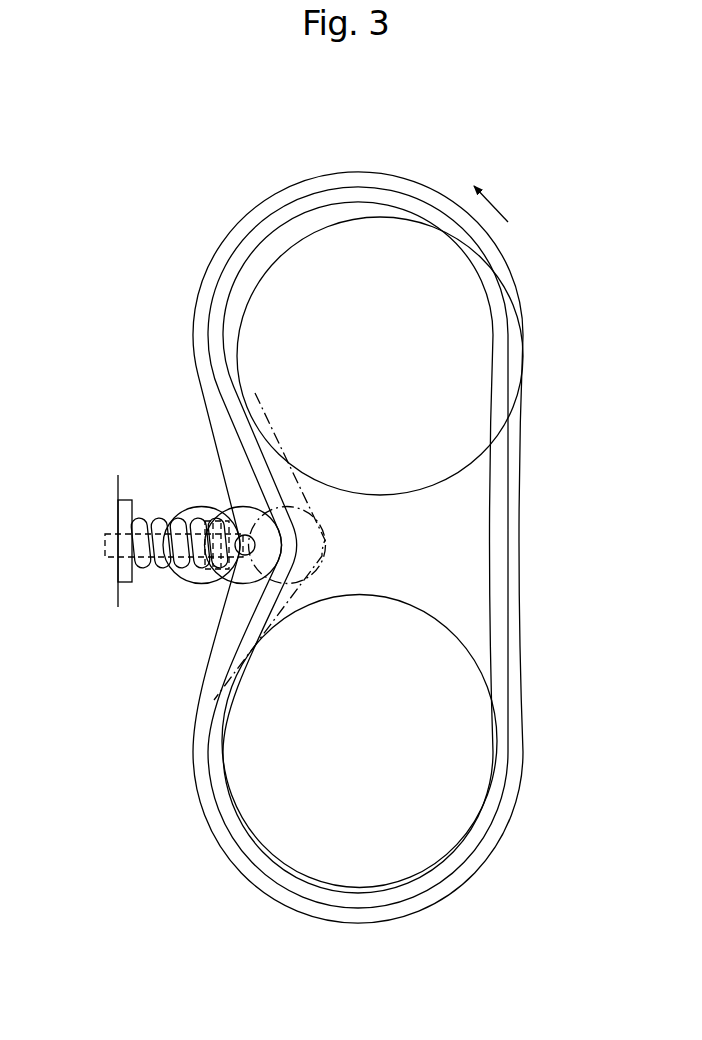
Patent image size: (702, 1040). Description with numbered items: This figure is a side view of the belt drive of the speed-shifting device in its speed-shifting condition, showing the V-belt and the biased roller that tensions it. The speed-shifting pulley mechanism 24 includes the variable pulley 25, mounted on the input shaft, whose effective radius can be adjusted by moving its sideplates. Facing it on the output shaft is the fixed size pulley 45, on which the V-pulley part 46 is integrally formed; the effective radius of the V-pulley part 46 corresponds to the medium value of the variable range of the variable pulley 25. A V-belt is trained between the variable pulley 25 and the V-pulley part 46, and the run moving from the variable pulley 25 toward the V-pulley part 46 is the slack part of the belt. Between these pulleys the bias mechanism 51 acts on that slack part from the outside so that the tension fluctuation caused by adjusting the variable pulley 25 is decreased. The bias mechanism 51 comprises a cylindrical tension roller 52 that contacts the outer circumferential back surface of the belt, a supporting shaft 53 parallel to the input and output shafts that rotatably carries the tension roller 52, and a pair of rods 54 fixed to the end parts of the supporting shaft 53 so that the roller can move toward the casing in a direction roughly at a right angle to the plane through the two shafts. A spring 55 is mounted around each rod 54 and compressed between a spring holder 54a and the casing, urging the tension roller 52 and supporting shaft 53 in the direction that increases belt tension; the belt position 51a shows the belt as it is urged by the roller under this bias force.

The speed-shifting pulley mechanism 24 is at (519, 677).
The variable pulley 25 is at (230, 236).
The fixed size pulley 45 is at (500, 848).
The V-pulley part 46 is at (419, 918).
The bias mechanism 51 is at (496, 482).
The belt phantom position 51a is at (253, 452).
The tension roller 52 is at (176, 572).
The supporting shaft 53 is at (231, 507).
The rod 54 is at (117, 522).
The spring holder 54a is at (218, 583).
The spring 55 is at (145, 516).